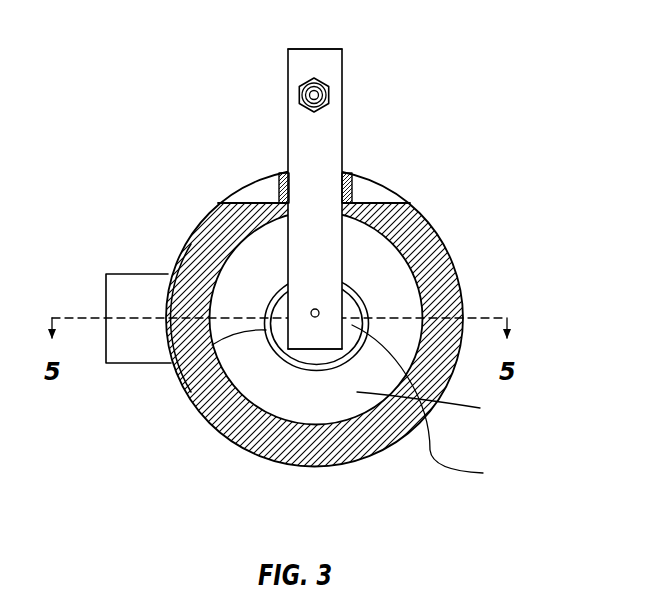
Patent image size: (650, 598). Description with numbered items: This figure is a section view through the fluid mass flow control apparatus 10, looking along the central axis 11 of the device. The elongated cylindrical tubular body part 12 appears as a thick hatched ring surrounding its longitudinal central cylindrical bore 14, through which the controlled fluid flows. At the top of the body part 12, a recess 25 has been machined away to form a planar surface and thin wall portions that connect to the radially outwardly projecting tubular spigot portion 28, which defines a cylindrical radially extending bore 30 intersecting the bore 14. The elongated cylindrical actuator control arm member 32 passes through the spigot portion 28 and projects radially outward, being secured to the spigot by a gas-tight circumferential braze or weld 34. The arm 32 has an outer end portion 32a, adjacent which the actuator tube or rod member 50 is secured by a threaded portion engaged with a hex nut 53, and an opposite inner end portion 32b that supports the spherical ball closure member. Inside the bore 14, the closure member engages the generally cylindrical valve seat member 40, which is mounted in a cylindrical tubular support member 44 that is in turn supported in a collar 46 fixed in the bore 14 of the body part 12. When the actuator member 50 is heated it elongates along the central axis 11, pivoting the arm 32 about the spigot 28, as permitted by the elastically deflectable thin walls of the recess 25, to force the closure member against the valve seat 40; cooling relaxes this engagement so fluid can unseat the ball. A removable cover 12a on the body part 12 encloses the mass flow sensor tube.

The fluid mass flow control apparatus 10 is at (452, 85).
The central axis 11 is at (311, 314).
The tubular body part 12 is at (315, 467).
The removable cover 12a is at (160, 273).
The central cylindrical bore 14 is at (238, 397).
The recess 25 is at (385, 202).
The tubular spigot portion 28 is at (351, 178).
The radially extending bore 30 is at (342, 190).
The actuator control arm member 32 is at (287, 70).
The arm end portion 32a is at (323, 49).
The arm end portion 32b is at (313, 350).
The circumferential braze or weld 34 is at (283, 172).
The valve seat member 40 is at (435, 407).
The tubular support member 44 is at (190, 393).
The collar 46 is at (435, 405).
The actuator tube or rod member 50 is at (320, 84).
The hex nut 53 is at (314, 78).